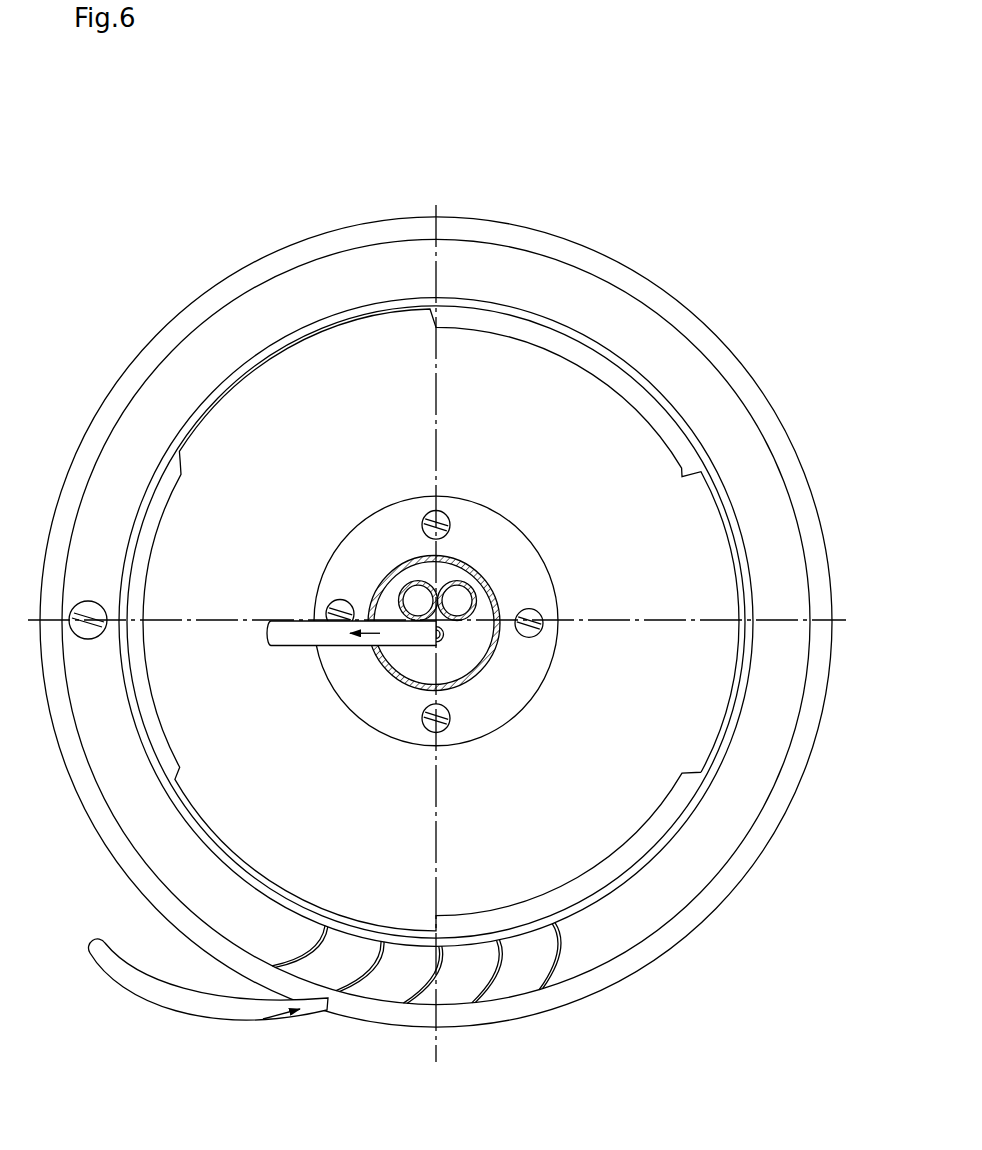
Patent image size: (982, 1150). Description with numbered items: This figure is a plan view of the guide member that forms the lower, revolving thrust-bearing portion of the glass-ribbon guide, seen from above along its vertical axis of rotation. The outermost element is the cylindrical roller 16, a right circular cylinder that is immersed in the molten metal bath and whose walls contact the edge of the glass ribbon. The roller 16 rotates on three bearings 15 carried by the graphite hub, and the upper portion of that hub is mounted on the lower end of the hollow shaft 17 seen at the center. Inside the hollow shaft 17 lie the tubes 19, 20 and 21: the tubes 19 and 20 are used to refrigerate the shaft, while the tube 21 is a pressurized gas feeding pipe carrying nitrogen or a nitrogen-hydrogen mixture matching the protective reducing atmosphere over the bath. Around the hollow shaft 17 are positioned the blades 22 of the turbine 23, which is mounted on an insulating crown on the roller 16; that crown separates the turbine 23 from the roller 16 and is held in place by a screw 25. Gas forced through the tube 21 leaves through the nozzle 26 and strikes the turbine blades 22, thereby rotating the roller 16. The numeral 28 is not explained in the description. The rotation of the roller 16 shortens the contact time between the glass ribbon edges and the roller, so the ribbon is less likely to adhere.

The bearings 15 is at (708, 490).
The cylindrical roller 16 is at (650, 282).
The hollow shaft 17 is at (503, 608).
The tube 19 is at (406, 580).
The tube 20 is at (475, 600).
The pressurized gas feeding pipe 21 is at (283, 620).
The blades 22 is at (500, 973).
The turbine 23 is at (628, 960).
The screw 25 is at (80, 630).
The nozzle 26 is at (253, 1037).
The wheel disc 28 is at (492, 413).